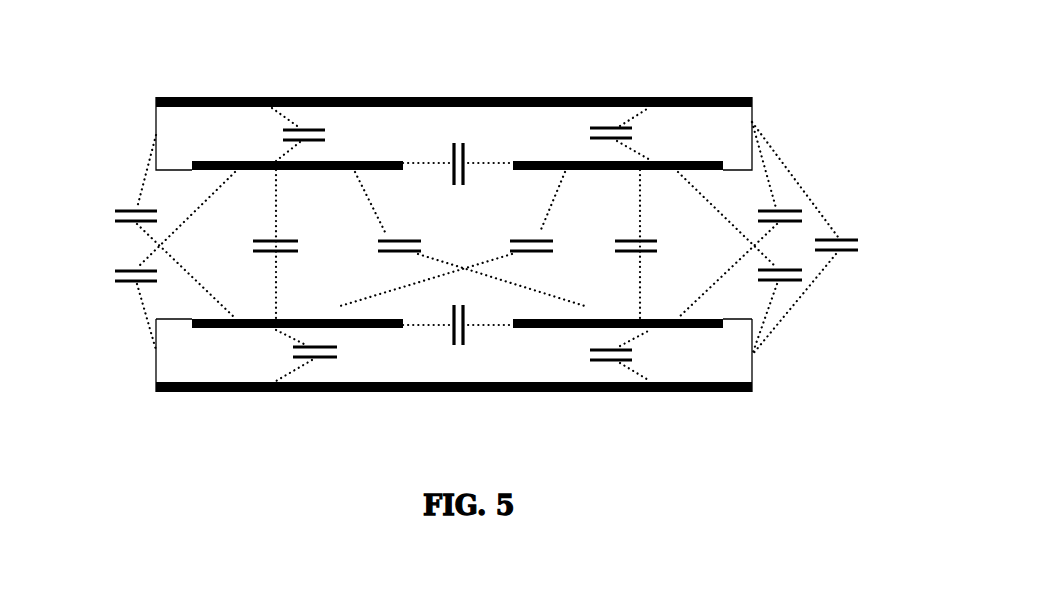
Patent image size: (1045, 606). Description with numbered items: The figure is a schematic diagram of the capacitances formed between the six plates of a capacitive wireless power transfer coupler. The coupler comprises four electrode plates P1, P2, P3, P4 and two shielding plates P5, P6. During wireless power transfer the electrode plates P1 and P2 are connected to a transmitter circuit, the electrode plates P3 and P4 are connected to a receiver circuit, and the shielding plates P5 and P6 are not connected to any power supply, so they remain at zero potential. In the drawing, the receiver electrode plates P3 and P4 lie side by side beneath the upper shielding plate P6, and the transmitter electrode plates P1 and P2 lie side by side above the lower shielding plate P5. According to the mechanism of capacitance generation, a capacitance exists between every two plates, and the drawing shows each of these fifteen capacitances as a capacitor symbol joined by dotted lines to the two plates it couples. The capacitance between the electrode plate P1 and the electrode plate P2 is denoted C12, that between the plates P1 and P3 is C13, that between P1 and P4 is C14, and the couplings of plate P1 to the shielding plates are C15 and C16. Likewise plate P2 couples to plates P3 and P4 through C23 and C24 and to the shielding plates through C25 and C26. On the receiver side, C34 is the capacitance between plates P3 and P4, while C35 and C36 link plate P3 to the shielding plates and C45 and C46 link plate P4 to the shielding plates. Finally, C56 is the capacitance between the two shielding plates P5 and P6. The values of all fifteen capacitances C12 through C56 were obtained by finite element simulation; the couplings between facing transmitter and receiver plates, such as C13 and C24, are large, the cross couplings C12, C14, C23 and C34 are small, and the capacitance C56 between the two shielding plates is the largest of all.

The electrode plate P1 is at (203, 327).
The electrode plate P2 is at (720, 328).
The electrode plate P3 is at (225, 161).
The electrode plate P4 is at (692, 162).
The shielding plate P5 is at (720, 390).
The shielding plate P6 is at (663, 98).
The capacitance between electrode plates P1 and P2 C12 is at (458, 340).
The capacitance between electrode plates P1 and P3 C13 is at (265, 244).
The capacitance between electrode plates P1 and P4 C14 is at (451, 239).
The capacitance between electrode plate P1 and shielding plate P5 C15 is at (328, 355).
The capacitance between electrode plate P1 and shielding plate P6 C16 is at (175, 226).
The capacitance between electrode plates P2 and P3 C23 is at (468, 239).
The capacitance between electrode plates P2 and P4 C24 is at (628, 244).
The capacitance between electrode plate P2 and shielding plate P5 C25 is at (599, 355).
The capacitance between electrode plate P2 and shielding plate P6 C26 is at (740, 220).
The capacitance between electrode plates P3 and P4 C34 is at (458, 148).
The capacitance between electrode plate P3 and shielding plate P5 C35 is at (175, 261).
The capacitance between electrode plate P3 and shielding plate P6 C36 is at (319, 134).
The capacitance between electrode plate P4 and shielding plate P5 C45 is at (740, 263).
The capacitance between electrode plate P4 and shielding plate P6 C46 is at (598, 134).
The capacitance between shielding plates P5 and P6 C56 is at (816, 238).